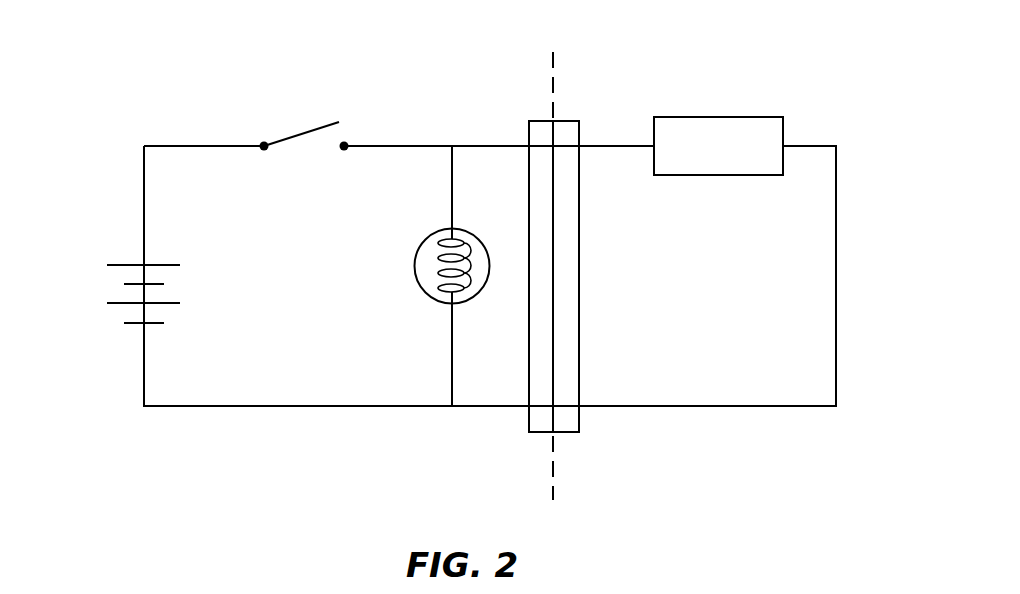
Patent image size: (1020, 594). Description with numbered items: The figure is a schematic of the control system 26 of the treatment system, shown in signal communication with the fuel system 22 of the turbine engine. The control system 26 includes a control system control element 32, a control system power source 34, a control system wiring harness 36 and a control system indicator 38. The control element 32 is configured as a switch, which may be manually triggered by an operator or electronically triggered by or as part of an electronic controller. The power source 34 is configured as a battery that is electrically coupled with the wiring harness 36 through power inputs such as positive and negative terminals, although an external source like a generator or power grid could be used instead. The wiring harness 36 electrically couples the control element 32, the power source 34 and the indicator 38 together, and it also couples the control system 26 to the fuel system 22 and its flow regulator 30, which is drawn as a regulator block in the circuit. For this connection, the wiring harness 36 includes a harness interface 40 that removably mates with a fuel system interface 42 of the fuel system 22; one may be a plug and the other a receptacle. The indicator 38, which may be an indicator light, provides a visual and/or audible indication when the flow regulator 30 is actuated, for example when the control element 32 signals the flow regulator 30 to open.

The fuel system 22 is at (851, 91).
The control system 26 is at (155, 121).
The flow regulator 30 is at (699, 114).
The control system control element 32 is at (304, 112).
The control system power source 34 is at (97, 317).
The control system wiring harness 36 is at (295, 421).
The control system indicator 38 is at (404, 271).
The harness interface 40 is at (539, 439).
The fuel system interface 42 is at (570, 439).